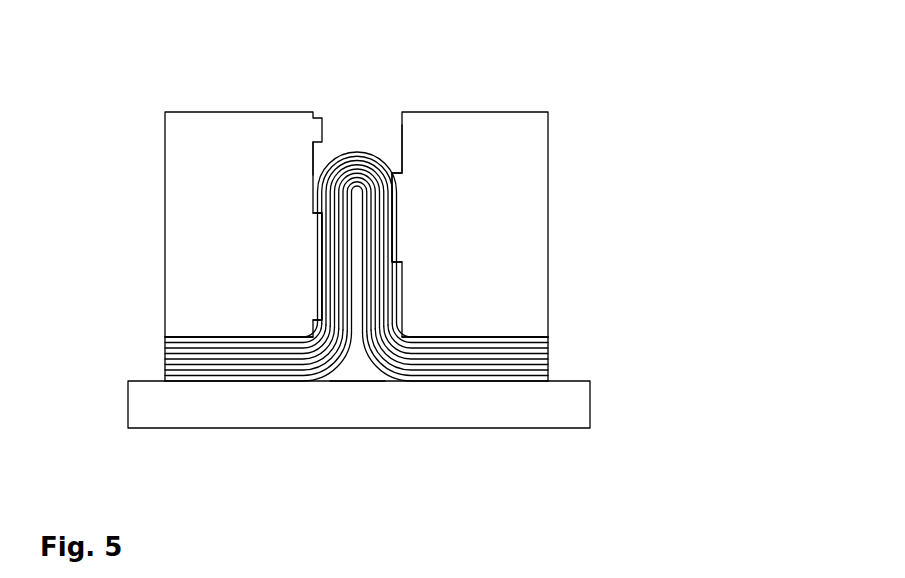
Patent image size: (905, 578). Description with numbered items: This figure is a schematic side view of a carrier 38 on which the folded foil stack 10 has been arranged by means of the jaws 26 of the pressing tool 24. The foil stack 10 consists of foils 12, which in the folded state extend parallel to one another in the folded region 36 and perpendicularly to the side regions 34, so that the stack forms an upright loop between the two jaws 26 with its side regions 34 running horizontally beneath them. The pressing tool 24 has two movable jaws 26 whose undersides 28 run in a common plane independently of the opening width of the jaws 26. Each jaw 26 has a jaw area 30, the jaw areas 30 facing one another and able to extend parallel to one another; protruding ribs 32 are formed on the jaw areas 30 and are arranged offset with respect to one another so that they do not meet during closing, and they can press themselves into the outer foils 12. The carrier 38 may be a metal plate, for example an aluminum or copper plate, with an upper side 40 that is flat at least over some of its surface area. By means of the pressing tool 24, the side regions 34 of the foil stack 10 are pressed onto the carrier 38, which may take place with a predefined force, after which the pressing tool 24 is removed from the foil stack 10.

The pressing tool 24 is at (514, 80).
The jaws 26 is at (187, 243).
The undersides 28 is at (213, 335).
The jaw area 30 is at (311, 157).
The ribs 32 is at (313, 223).
The side regions 34 is at (245, 370).
The folded region 36 is at (353, 120).
The carrier 38 is at (428, 412).
The upper side 40 is at (365, 390).
The foil stack 10 is at (423, 269).
The foils 12 is at (423, 269).